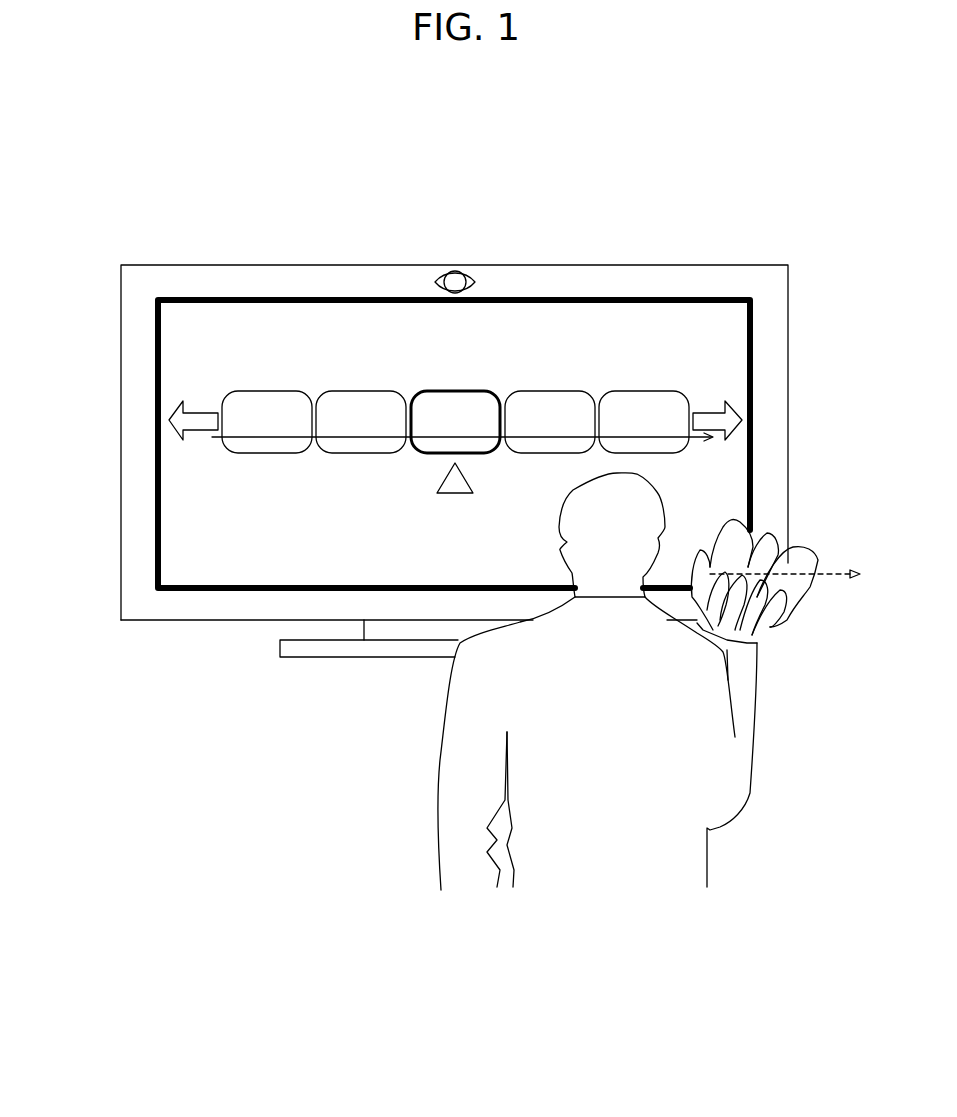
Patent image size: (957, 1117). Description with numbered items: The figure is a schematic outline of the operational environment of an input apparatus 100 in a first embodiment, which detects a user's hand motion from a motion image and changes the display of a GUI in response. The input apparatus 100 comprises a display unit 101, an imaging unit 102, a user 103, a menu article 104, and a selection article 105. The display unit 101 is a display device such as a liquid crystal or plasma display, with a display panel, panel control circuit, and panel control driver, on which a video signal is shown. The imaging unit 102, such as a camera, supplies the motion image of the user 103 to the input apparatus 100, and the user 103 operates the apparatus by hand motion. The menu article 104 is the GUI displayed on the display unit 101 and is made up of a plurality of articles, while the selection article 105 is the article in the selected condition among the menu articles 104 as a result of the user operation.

The input apparatus 100 is at (788, 318).
The display unit 101 is at (753, 390).
The imaging unit 102 is at (470, 278).
The user 103 is at (710, 847).
The menu article 104 is at (222, 395).
The selection article 105 is at (432, 392).